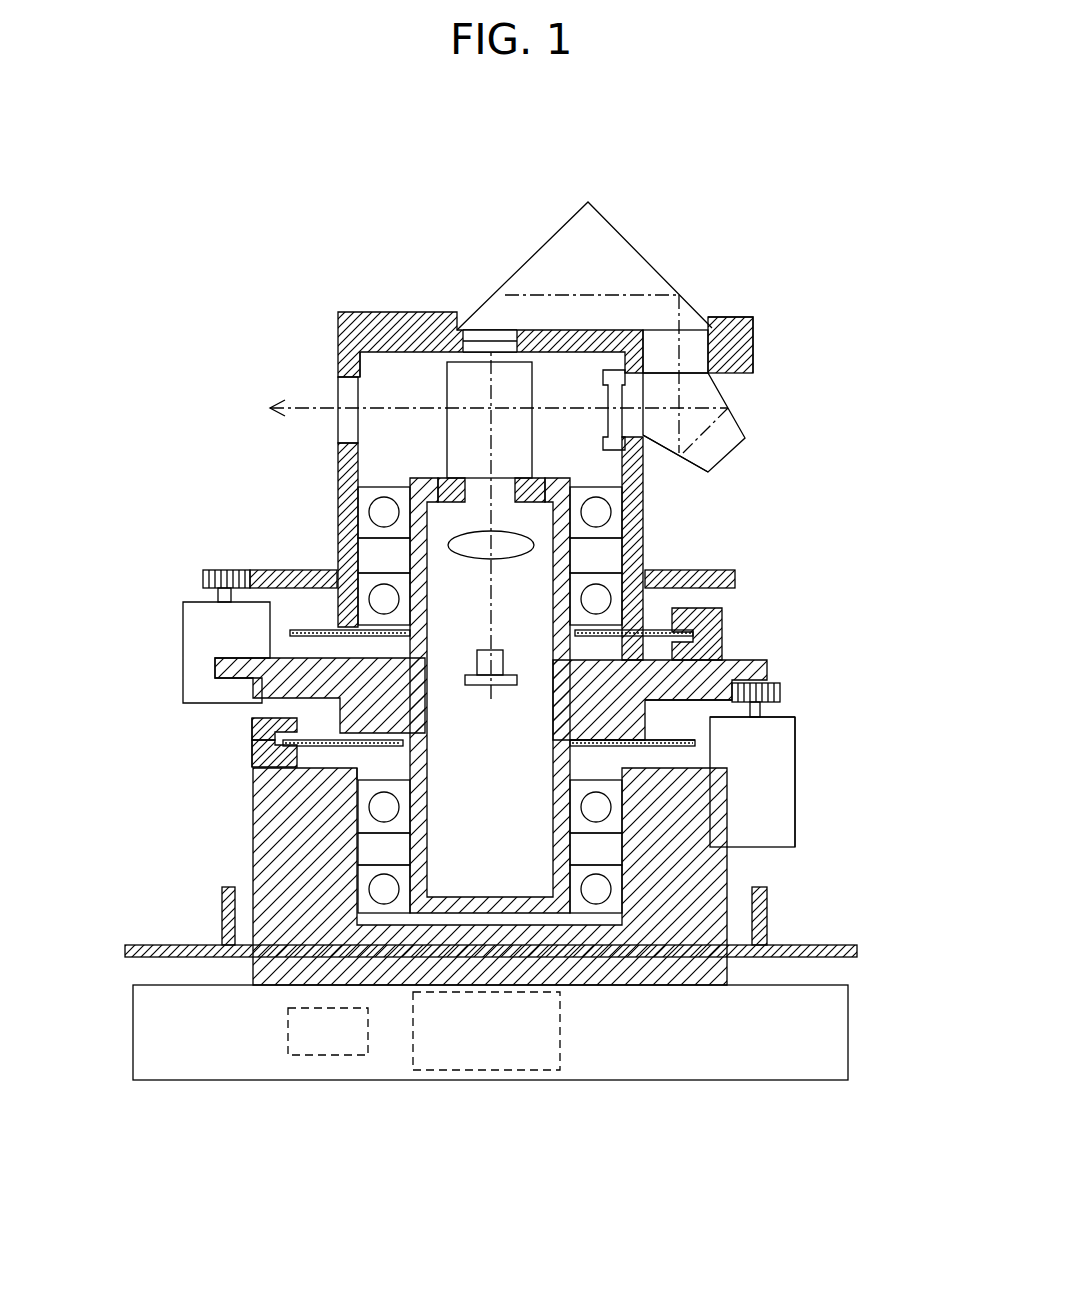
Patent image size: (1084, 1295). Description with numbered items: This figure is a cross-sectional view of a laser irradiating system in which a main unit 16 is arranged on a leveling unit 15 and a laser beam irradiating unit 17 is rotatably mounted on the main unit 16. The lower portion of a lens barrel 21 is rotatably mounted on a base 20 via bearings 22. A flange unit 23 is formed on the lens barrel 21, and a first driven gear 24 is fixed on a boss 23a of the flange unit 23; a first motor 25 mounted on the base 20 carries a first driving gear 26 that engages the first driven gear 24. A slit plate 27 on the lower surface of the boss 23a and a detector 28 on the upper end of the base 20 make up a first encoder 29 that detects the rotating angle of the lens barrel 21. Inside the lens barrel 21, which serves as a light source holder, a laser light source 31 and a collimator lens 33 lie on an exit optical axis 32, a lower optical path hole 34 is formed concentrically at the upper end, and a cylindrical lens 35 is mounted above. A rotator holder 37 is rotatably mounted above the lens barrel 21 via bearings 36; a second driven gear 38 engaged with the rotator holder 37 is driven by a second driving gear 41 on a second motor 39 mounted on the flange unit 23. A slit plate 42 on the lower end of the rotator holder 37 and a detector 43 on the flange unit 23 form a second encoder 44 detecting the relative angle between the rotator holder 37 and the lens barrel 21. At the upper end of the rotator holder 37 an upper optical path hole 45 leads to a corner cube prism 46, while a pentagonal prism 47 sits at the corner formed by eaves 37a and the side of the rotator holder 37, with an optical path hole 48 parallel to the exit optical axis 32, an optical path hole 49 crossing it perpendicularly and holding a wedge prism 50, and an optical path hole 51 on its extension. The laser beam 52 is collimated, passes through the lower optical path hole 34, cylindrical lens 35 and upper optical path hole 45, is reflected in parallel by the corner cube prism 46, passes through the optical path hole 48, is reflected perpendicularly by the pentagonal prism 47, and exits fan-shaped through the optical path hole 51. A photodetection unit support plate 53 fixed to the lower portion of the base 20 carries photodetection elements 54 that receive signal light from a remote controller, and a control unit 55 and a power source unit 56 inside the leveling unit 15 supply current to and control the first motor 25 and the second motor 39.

The leveling unit 15 is at (850, 1008).
The main unit 16 is at (805, 745).
The laser beam irradiating unit 17 is at (760, 347).
The base 20 is at (253, 830).
The lens barrel 21 is at (403, 647).
The bearings 22 is at (357, 772).
The flange unit 23 is at (745, 662).
The boss 23a is at (690, 752).
The first driven gear 24 is at (780, 692).
The first motor 25 is at (795, 812).
The first driving gear 26 is at (797, 722).
The slit plate 27 is at (262, 718).
The detector 28 is at (255, 740).
The first encoder 29 is at (237, 764).
The laser light source 31 is at (527, 690).
The exit optical axis 32 is at (497, 455).
The collimator lens 33 is at (470, 560).
The lower optical path hole 34 is at (470, 480).
The cylindrical lens 35 is at (443, 375).
The bearings 36 is at (400, 470).
The rotator holder 37 is at (340, 326).
The eaves 37a is at (742, 380).
The second driven gear 38 is at (290, 566).
The second motor 39 is at (185, 606).
The second driving gear 41 is at (225, 570).
The slit plate 42 is at (715, 606).
The detector 43 is at (727, 618).
The second encoder 44 is at (730, 642).
The upper optical path hole 45 is at (502, 348).
The corner cube prism 46 is at (608, 232).
The pentagonal prism 47 is at (750, 443).
The optical path hole 48 is at (693, 348).
The optical path hole 49 is at (613, 340).
The wedge prism 50 is at (655, 440).
The optical path hole 51 is at (350, 400).
The laser beam 52 is at (512, 562).
The photodetection unit support plate 53 is at (815, 945).
The photodetection elements 54 is at (222, 922).
The control unit 55 is at (560, 1043).
The power source unit 56 is at (338, 1057).